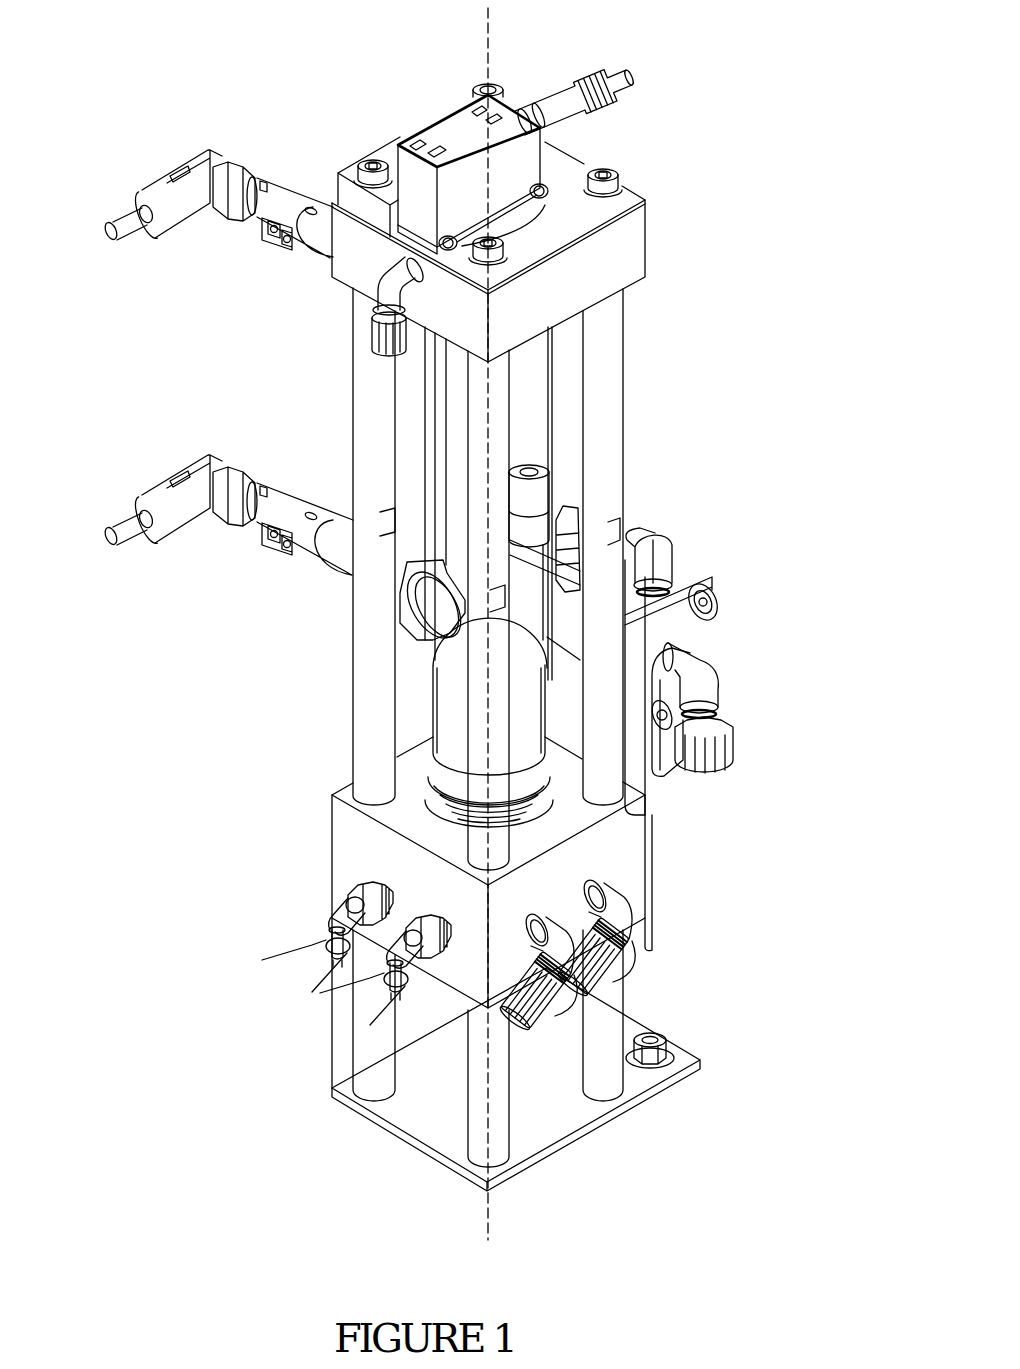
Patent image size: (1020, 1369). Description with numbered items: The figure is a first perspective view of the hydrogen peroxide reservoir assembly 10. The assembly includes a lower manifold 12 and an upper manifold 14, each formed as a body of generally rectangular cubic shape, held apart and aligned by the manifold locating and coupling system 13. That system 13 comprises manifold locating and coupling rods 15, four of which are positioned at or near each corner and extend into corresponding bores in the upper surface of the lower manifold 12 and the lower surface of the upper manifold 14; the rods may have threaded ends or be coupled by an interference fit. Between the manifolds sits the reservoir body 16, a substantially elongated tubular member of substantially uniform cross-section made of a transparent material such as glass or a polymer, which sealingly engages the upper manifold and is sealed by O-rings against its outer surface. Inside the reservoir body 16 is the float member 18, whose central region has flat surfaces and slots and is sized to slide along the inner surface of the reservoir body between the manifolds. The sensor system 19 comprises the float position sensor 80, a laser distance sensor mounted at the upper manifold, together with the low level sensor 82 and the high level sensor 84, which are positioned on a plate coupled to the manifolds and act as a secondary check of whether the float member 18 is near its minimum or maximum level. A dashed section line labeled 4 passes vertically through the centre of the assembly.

The hydrogen peroxide reservoir assembly 10 is at (716, 45).
The section line 4 is at (462, 4).
The lower manifold 12 is at (331, 857).
The manifold locating and coupling system 13 is at (336, 641).
The upper manifold 14 is at (651, 237).
The manifold locating and coupling rods 15 is at (624, 394).
The reservoir body 16 is at (554, 432).
The float member 18 is at (454, 722).
The sensor system 19 is at (437, 121).
The float position sensor 80 is at (519, 100).
The low level sensor 82 is at (268, 549).
The high level sensor 84 is at (268, 244).